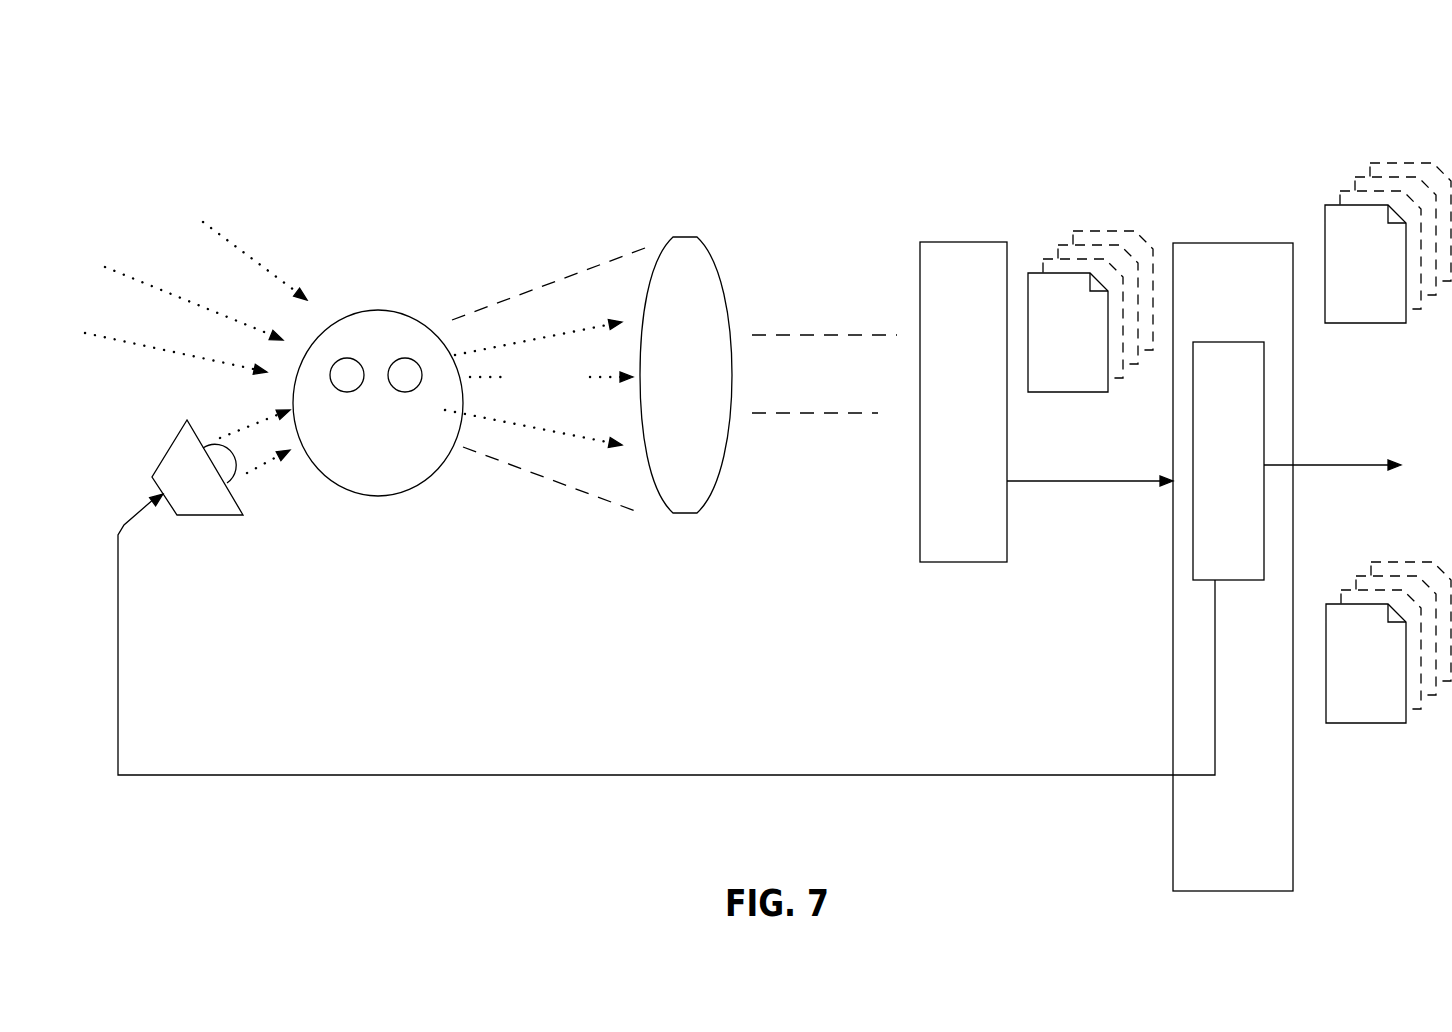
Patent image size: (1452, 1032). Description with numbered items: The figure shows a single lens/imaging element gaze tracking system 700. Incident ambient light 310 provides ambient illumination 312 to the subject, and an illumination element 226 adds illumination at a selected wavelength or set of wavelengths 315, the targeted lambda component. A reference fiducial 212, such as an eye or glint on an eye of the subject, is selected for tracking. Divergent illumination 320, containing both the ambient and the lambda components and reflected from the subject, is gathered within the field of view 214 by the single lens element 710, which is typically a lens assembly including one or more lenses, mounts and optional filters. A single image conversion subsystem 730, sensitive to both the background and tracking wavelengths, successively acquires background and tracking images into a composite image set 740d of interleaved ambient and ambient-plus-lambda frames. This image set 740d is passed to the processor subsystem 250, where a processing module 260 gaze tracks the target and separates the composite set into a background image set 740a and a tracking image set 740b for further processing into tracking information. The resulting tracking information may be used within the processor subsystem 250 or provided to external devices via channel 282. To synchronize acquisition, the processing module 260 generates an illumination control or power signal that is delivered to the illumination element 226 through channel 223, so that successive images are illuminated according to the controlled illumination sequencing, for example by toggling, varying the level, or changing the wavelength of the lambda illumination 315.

The single lens/imaging element gaze tracking system 700 is at (678, 106).
The incident ambient light 310 is at (152, 181).
The ambient illumination 312 is at (169, 317).
The illumination element 226 is at (187, 420).
The channel 223 is at (430, 770).
The illumination at a selected wavelength, range of wavelengths or set of wavelength 315 is at (257, 506).
The reference fiducial 212 is at (388, 348).
The field of view 214 is at (578, 250).
The illumination 320 is at (522, 392).
The single lens element 710 is at (677, 233).
The single image conversion subsystem 730 is at (937, 551).
The image set 740d is at (1039, 233).
The processor subsystem 250 is at (1181, 879).
The processing module 260 is at (1201, 574).
The channel 282 is at (1343, 458).
The ambient image frames 740a is at (1243, 380).
The ambient plus wavelength image frames 740b is at (1264, 536).